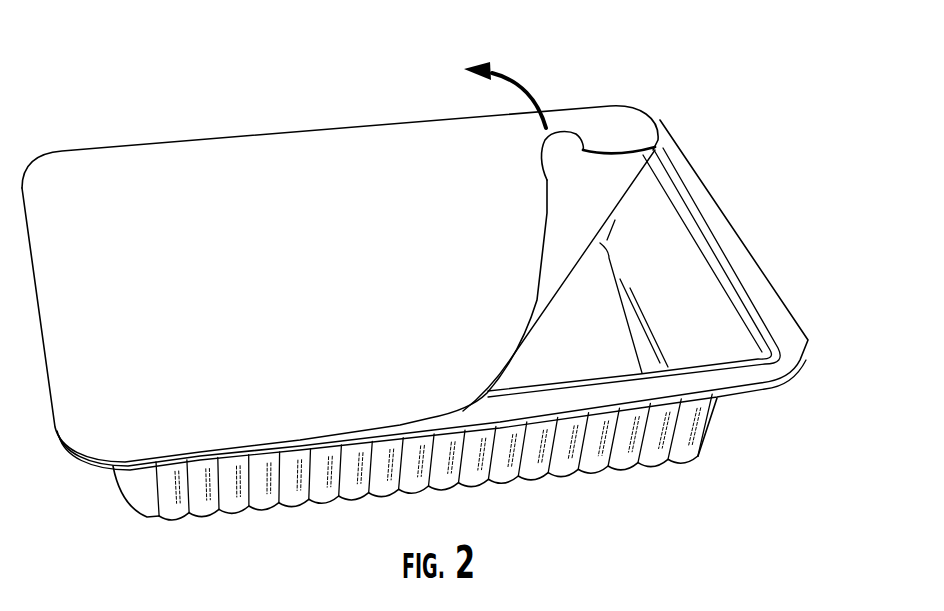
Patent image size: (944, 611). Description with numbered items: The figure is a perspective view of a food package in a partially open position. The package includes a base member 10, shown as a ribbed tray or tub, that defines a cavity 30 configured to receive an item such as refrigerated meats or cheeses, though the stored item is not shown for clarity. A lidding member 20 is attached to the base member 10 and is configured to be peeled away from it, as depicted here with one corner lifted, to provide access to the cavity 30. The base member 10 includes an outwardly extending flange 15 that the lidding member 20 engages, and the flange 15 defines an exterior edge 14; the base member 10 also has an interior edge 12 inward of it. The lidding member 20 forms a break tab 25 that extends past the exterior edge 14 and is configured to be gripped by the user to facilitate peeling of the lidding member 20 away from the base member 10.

The base member 10 is at (630, 453).
The interior edge 12 is at (733, 270).
The exterior edge 14 is at (788, 302).
The flange 15 is at (785, 338).
The lidding member 20 is at (295, 190).
The break tab 25 is at (567, 142).
The cavity 30 is at (582, 312).